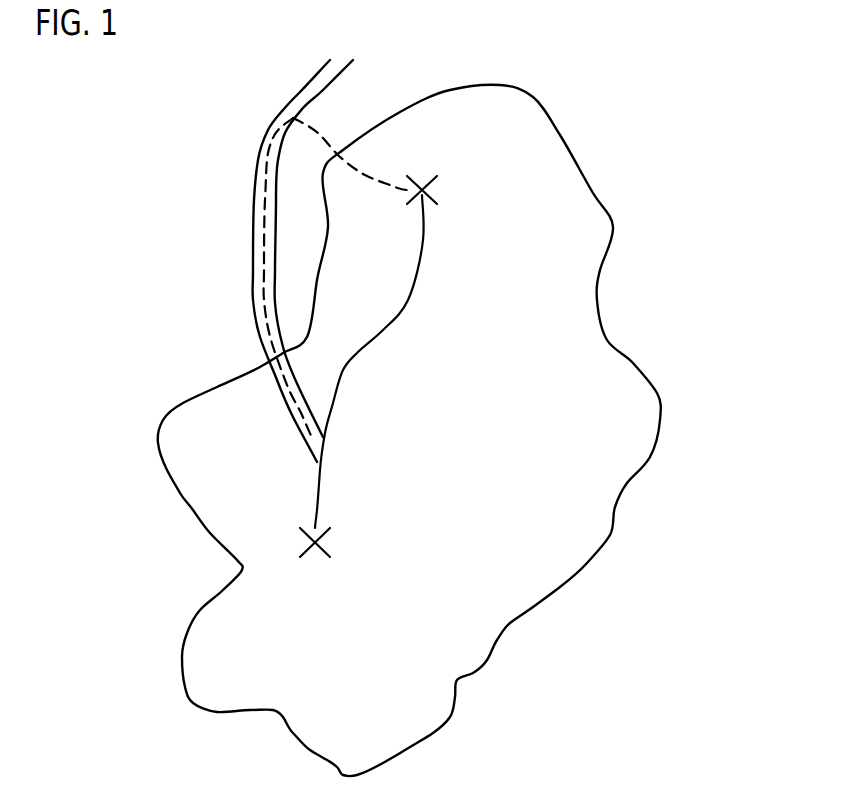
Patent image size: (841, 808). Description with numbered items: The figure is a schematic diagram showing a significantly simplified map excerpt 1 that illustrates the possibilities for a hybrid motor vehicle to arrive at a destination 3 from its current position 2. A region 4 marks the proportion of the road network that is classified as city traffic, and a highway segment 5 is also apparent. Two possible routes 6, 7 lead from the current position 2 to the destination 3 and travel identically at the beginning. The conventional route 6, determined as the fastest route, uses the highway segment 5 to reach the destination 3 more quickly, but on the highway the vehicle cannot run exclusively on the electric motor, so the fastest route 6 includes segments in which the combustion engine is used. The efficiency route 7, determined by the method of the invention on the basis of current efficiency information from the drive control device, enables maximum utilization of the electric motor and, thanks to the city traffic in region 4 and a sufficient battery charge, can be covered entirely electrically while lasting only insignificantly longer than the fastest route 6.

The map excerpt 1 is at (451, 425).
The current position 2 is at (315, 557).
The destination 3 is at (422, 190).
The region 4 is at (530, 597).
The highway segment 5 is at (257, 180).
The conventional route 6 is at (263, 255).
The efficiency route 7 is at (390, 330).